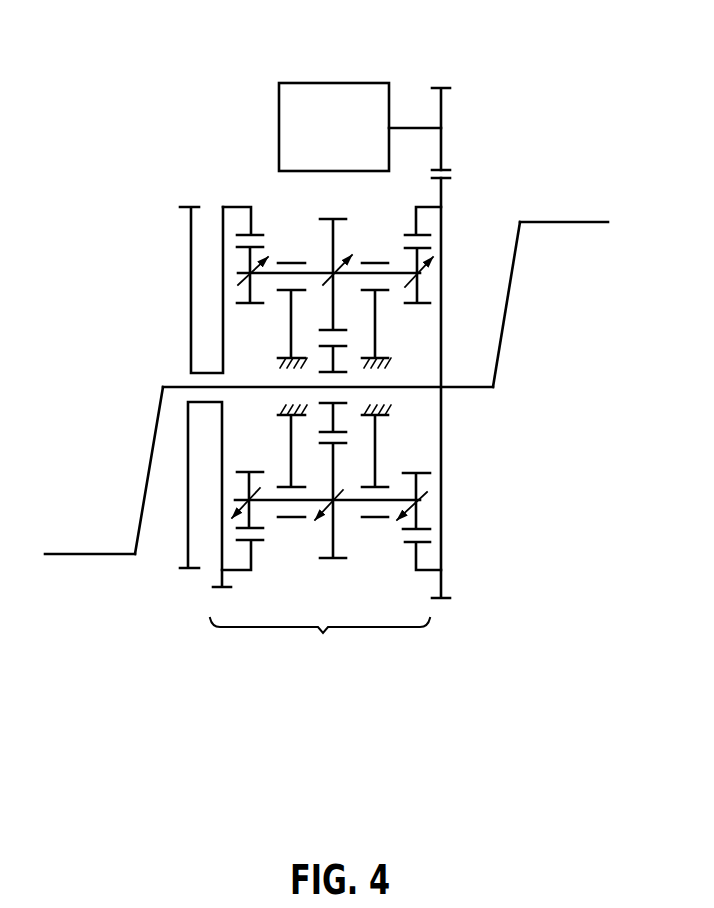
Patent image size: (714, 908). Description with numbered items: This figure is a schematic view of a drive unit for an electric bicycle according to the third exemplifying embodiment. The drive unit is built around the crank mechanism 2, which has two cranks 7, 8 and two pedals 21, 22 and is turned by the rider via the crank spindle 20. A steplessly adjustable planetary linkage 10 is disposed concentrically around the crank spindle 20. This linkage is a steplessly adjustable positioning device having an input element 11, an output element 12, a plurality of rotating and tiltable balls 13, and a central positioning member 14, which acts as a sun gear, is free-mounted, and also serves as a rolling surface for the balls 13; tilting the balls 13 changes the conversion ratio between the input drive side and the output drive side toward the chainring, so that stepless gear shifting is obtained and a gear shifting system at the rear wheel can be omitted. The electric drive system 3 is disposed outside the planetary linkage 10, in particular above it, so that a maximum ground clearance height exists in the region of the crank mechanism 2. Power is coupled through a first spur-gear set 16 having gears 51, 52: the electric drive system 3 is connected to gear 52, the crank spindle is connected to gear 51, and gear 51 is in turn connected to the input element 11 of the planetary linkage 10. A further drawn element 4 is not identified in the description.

The crank mechanism 2 is at (520, 393).
The electric drive system 3 is at (333, 95).
The housing carrier 4 is at (191, 288).
The crank 7 is at (508, 305).
The crank 8 is at (146, 470).
The steplessly adjustable planetary linkage 10 is at (321, 457).
The input element 11 is at (416, 218).
The output element 12 is at (232, 207).
The balls 13 is at (318, 273).
The central positioning member 14 is at (334, 418).
The first spur-gear set 16 is at (460, 170).
The crank spindle 20 is at (260, 387).
The pedal 21 is at (580, 222).
The pedal 22 is at (75, 556).
The gear 51 is at (443, 223).
The gear 52 is at (441, 110).